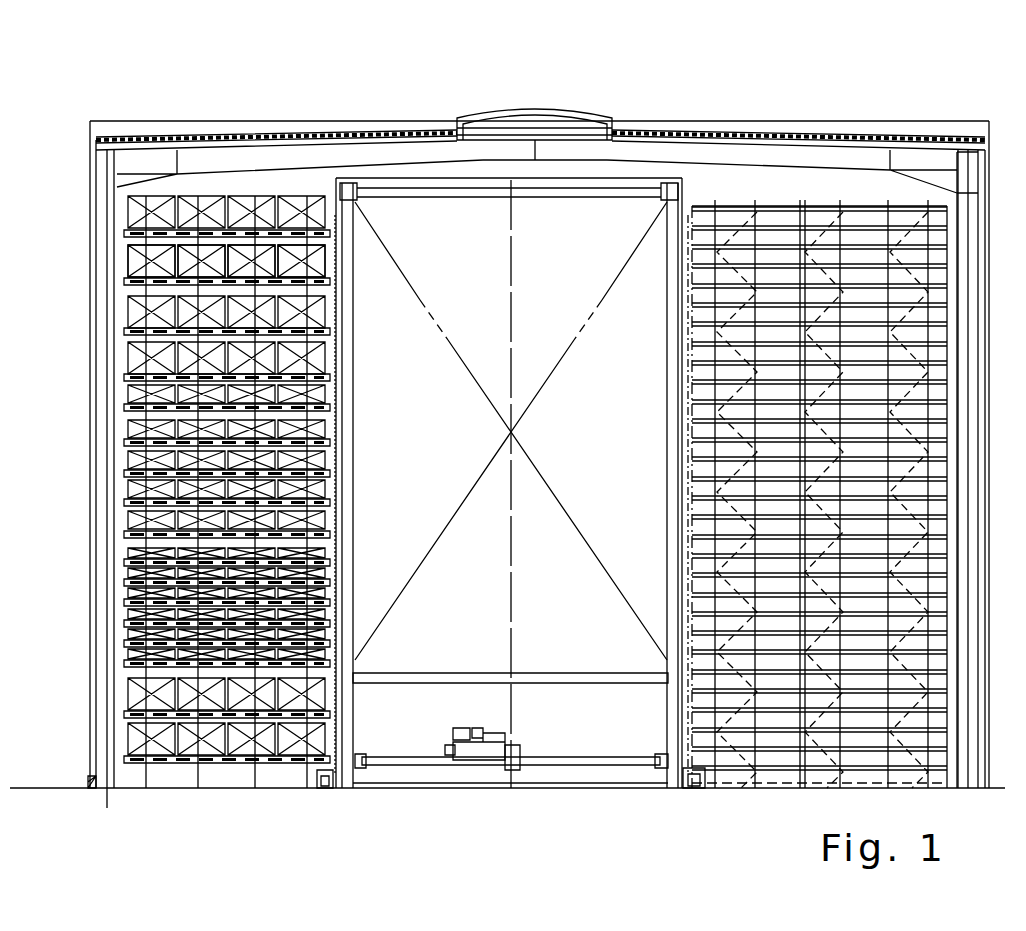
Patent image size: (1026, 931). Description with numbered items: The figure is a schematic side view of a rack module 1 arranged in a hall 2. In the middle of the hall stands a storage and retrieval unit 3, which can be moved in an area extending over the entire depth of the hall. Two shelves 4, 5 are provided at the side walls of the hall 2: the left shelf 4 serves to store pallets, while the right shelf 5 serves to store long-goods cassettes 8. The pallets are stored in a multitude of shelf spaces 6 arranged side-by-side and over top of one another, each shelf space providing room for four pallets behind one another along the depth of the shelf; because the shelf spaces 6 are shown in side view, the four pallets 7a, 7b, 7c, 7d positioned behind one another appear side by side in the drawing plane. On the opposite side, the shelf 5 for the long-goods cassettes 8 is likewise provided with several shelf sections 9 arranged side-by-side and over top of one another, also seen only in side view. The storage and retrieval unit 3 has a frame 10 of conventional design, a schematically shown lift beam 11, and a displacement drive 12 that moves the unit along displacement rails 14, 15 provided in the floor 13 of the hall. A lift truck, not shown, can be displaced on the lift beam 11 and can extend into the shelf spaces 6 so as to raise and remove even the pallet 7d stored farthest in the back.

The rack module 1 is at (720, 110).
The hall 2 is at (968, 162).
The storage and retrieval unit 3 is at (472, 213).
The left shelf 4 is at (268, 187).
The right shelf 5 is at (780, 207).
The shelf spaces 6 is at (328, 260).
The pallet 7a is at (289, 258).
The pallet 7b is at (239, 258).
The pallet 7c is at (213, 258).
The pallet 7d is at (160, 258).
The long-goods cassettes 8 is at (853, 213).
The shelf sections 9 is at (688, 310).
The frame 10 is at (658, 182).
The lift beam 11 is at (558, 680).
The displacement drive 12 is at (485, 750).
The floor 13 is at (222, 788).
The displacement rail 14 is at (323, 790).
The displacement rail 15 is at (698, 790).